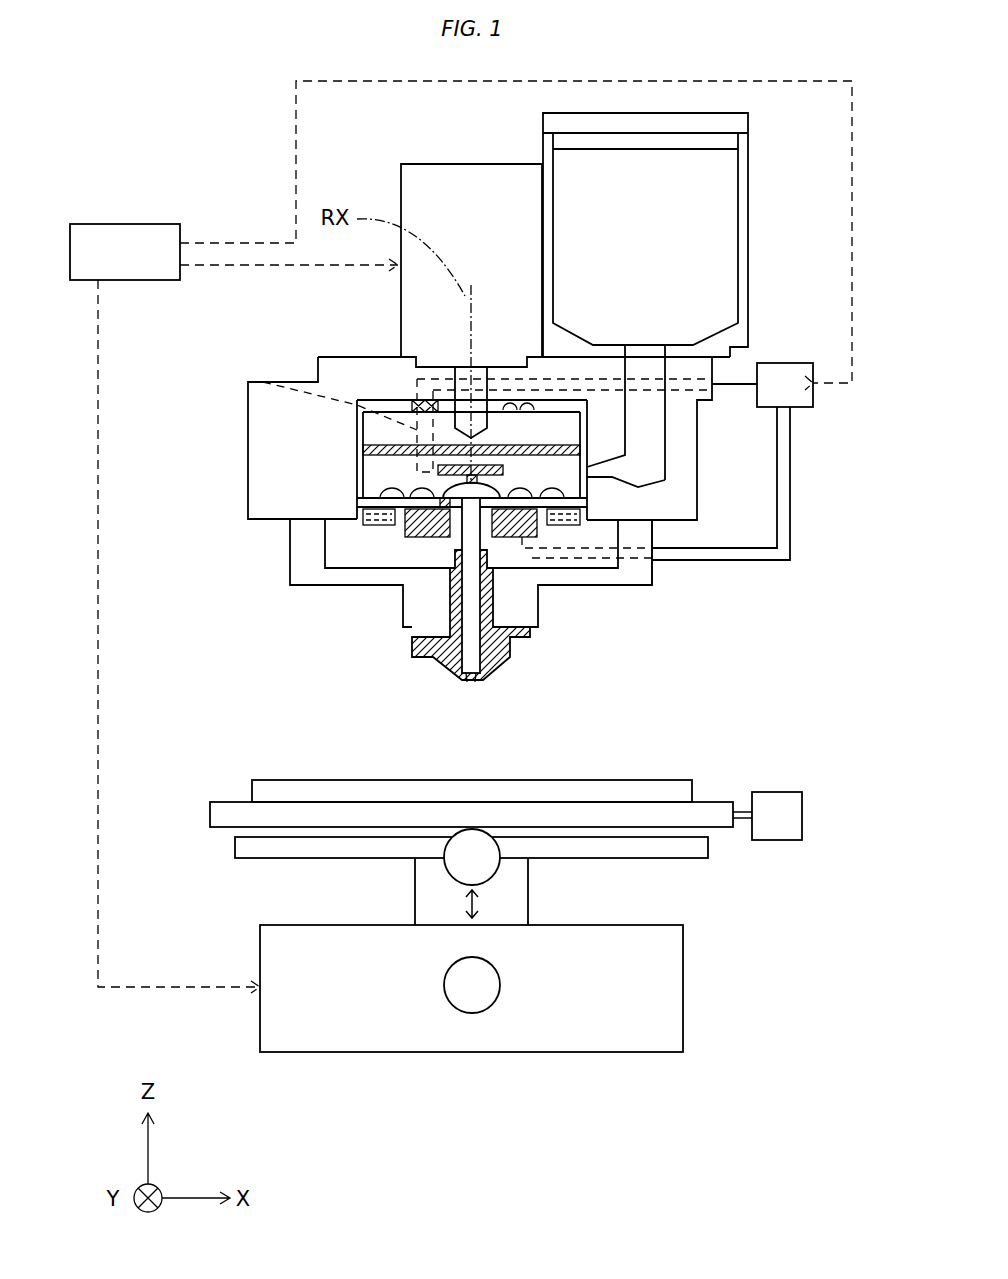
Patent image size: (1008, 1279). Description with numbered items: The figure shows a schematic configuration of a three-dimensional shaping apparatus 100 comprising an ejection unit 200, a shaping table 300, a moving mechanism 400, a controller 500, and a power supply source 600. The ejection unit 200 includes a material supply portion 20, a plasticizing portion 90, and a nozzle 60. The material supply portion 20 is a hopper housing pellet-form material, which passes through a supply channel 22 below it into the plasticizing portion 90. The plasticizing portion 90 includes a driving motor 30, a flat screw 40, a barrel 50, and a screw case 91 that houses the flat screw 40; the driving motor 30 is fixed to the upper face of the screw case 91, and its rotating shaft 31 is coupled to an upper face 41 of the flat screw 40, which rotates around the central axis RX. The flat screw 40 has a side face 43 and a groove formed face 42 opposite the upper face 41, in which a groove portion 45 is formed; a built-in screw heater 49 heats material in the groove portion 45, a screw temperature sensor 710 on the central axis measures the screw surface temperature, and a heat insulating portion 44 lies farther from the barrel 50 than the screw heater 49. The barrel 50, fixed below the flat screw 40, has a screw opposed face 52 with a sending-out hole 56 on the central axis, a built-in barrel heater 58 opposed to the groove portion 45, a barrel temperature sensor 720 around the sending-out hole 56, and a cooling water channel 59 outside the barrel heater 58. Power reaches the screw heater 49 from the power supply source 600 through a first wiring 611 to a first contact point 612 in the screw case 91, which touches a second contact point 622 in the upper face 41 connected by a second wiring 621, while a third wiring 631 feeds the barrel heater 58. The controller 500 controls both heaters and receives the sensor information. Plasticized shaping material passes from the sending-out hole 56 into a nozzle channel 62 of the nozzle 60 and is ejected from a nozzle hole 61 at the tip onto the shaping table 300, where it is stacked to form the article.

The three-dimensional shaping apparatus 100 is at (163, 109).
The controller 500 is at (132, 224).
The driving motor 30 is at (400, 188).
The rotating shaft 31 is at (462, 367).
The ejection unit 200 is at (762, 148).
The material supply portion 20 is at (748, 228).
The supply channel 22 is at (647, 448).
The power supply source 600 is at (780, 363).
The first wiring 611 is at (726, 384).
The second wiring 621 is at (263, 382).
The third wiring 631 is at (790, 494).
The first contact point 612 is at (432, 403).
The second contact point 622 is at (410, 405).
The upper face 41 is at (308, 382).
The flat screw 40 is at (357, 462).
The side face 43 is at (362, 412).
The heat insulating portion 44 is at (363, 447).
The groove portion 45 is at (438, 470).
The screw heater 49 is at (503, 472).
The screw opposed face 52 is at (380, 490).
The screw temperature sensor 710 is at (522, 492).
The barrel temperature sensor 720 is at (420, 540).
The groove formed face 42 is at (357, 503).
The barrel 50 is at (335, 540).
The cooling water channel 59 is at (378, 526).
The barrel heater 58 is at (425, 538).
The screw case 91 is at (652, 534).
The plasticizing portion 90 is at (681, 597).
The nozzle 60 is at (478, 611).
The nozzle channel 62 is at (468, 627).
The sending-out hole 56 is at (475, 540).
The nozzle hole 61 is at (473, 685).
The shaping table 300 is at (692, 790).
The moving mechanism 400 is at (739, 915).